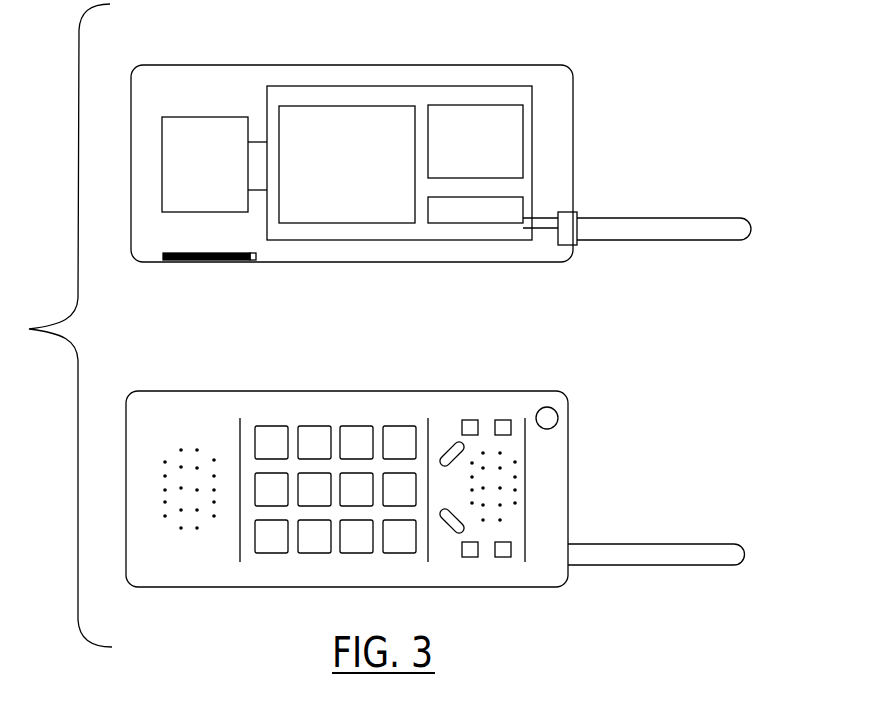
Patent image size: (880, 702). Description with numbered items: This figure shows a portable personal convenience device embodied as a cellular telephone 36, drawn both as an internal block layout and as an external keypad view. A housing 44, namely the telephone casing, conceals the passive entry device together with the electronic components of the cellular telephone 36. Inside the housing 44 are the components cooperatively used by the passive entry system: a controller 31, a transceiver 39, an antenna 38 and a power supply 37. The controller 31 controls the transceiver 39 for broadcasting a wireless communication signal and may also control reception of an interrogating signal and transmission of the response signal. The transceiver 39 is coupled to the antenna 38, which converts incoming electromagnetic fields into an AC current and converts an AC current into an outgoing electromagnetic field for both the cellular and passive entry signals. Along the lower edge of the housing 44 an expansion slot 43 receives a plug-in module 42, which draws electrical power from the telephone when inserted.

The cellular telephone 36 is at (594, 39).
The housing 44 is at (353, 65).
The controller 31 is at (527, 143).
The transceiver 39 is at (523, 207).
The antenna 38 is at (745, 218).
The power supply 37 is at (162, 168).
The plug-in module 42 is at (210, 262).
The expansion slot 43 is at (258, 262).